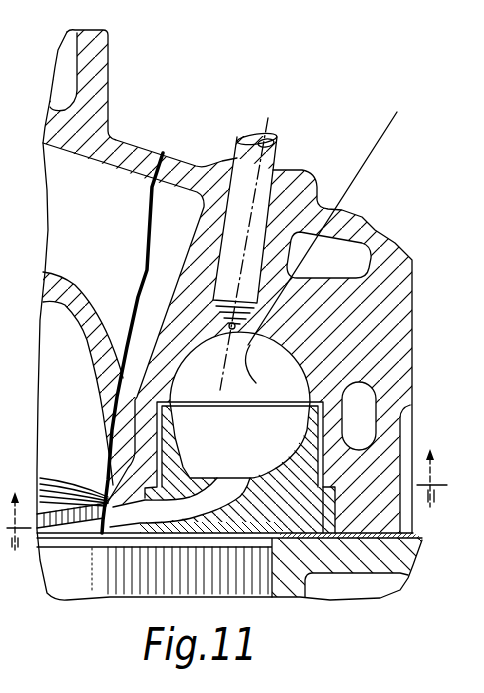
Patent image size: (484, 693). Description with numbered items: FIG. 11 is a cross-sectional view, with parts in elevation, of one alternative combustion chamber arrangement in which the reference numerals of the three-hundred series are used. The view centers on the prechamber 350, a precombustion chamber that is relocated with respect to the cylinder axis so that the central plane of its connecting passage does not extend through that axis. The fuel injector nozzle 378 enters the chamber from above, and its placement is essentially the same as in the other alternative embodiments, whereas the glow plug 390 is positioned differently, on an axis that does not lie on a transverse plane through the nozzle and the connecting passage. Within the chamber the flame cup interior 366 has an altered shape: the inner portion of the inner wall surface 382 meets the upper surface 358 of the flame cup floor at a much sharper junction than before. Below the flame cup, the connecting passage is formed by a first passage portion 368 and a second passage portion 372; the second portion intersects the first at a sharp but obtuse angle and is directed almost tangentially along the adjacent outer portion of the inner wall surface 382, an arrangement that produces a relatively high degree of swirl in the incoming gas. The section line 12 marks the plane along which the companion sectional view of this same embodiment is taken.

The section line 12- 12 is at (234, 517).
The prechamber 350 is at (290, 355).
The upper surface of the flame cup floor 358 is at (210, 474).
The flame cup interior 366 is at (181, 420).
The first passage portion 368 is at (176, 513).
The second passage portion 372 is at (248, 488).
The fuel injector nozzle 378 is at (276, 163).
The inner wall surface 382 is at (178, 437).
The glow plug 390 is at (272, 371).